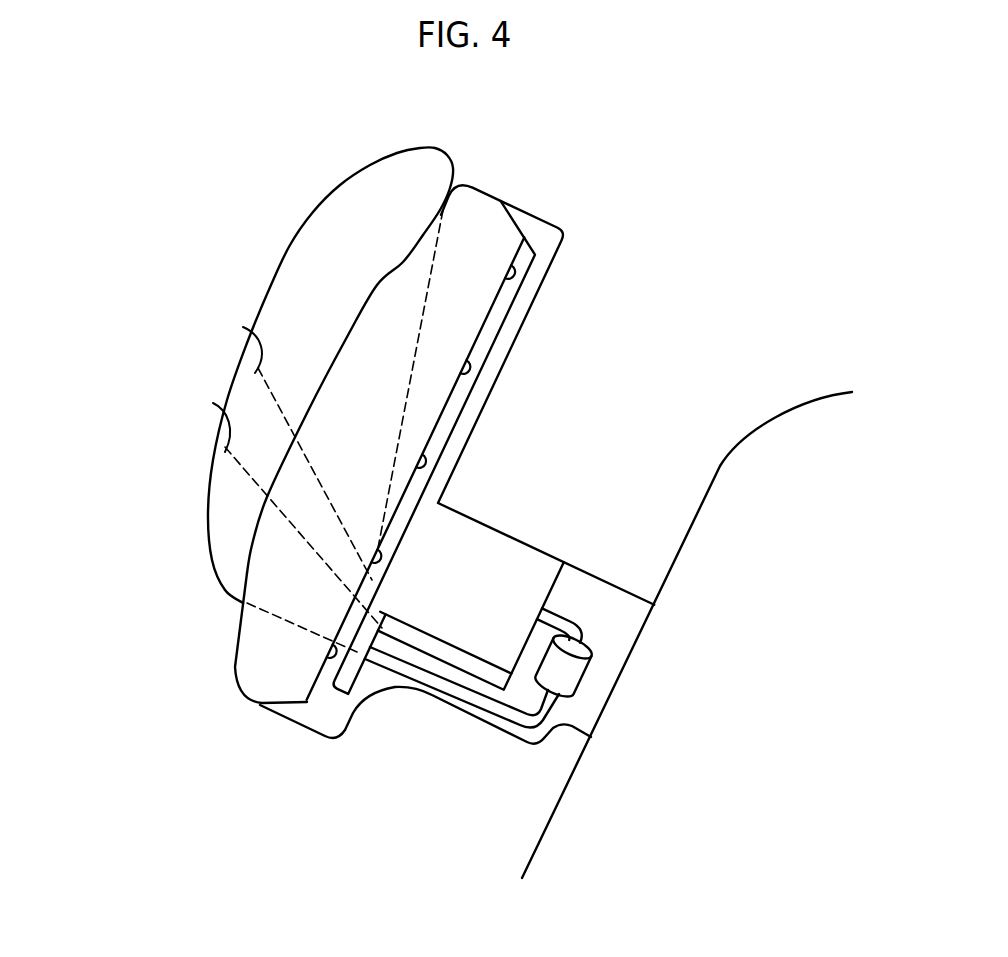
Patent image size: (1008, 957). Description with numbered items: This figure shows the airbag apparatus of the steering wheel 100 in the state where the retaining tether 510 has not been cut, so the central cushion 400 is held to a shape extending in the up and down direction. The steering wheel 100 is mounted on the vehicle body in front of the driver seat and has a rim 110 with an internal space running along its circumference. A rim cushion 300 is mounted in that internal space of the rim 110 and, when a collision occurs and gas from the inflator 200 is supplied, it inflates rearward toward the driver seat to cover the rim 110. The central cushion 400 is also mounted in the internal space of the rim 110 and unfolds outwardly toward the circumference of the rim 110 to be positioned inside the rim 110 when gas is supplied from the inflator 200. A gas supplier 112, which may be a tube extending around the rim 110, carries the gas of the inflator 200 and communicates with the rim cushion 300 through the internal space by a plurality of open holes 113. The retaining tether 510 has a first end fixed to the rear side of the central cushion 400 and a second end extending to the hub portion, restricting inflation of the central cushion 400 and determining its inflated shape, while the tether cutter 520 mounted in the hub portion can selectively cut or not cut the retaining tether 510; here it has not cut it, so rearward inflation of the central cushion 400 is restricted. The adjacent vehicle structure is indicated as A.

The steering wheel 100 is at (509, 190).
The rim 110 is at (562, 238).
The gas supplier 112 is at (366, 648).
The open holes 113 is at (473, 363).
The inflator 200 is at (570, 674).
The rim cushion 300 is at (243, 668).
The central cushion 400 is at (325, 231).
The retaining tether 510 is at (243, 327).
The tether cutter 520 is at (452, 654).
The vehicle panel A is at (688, 534).